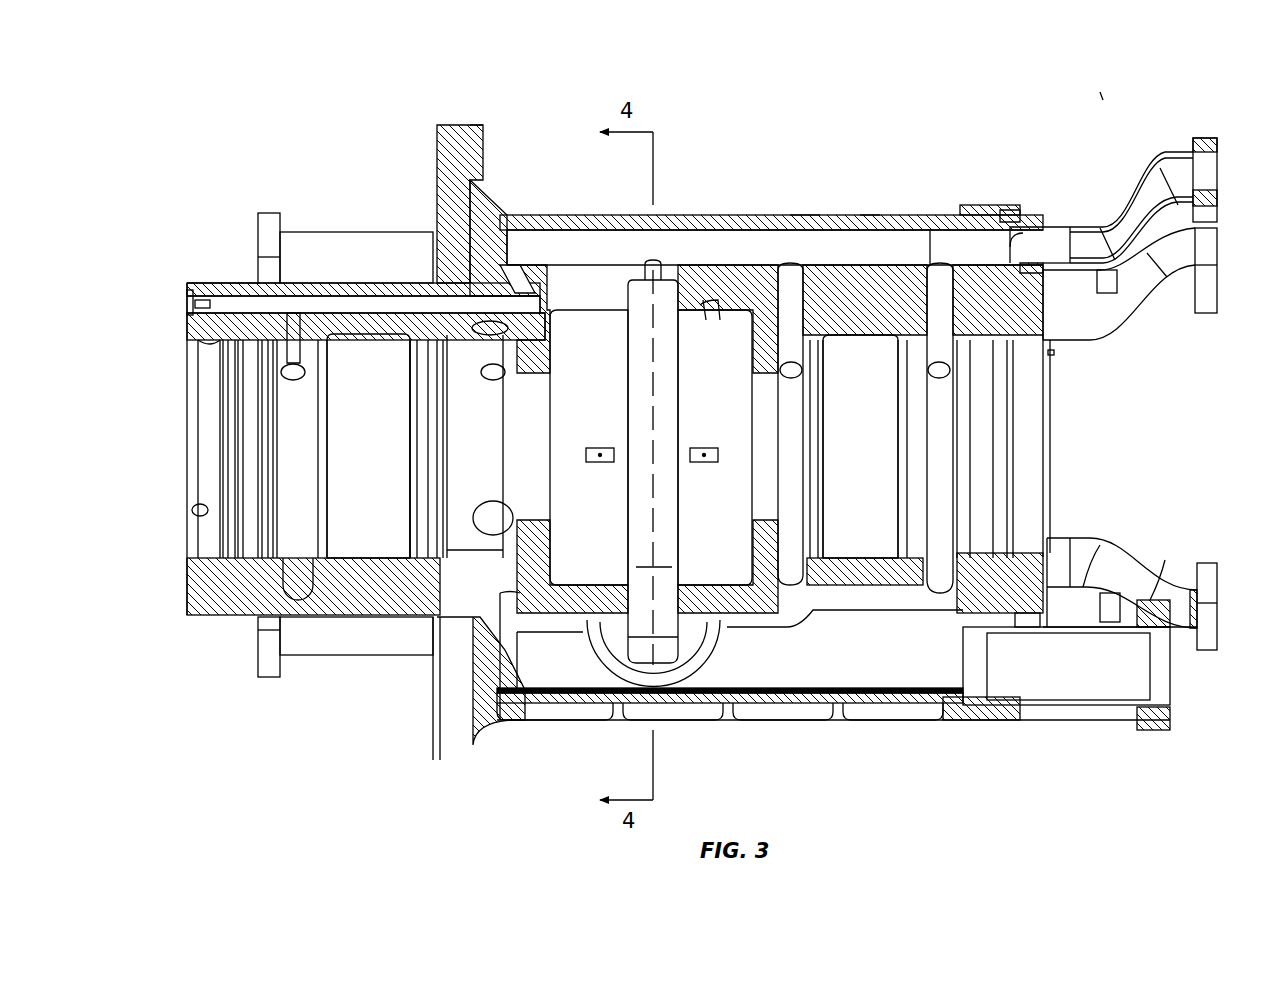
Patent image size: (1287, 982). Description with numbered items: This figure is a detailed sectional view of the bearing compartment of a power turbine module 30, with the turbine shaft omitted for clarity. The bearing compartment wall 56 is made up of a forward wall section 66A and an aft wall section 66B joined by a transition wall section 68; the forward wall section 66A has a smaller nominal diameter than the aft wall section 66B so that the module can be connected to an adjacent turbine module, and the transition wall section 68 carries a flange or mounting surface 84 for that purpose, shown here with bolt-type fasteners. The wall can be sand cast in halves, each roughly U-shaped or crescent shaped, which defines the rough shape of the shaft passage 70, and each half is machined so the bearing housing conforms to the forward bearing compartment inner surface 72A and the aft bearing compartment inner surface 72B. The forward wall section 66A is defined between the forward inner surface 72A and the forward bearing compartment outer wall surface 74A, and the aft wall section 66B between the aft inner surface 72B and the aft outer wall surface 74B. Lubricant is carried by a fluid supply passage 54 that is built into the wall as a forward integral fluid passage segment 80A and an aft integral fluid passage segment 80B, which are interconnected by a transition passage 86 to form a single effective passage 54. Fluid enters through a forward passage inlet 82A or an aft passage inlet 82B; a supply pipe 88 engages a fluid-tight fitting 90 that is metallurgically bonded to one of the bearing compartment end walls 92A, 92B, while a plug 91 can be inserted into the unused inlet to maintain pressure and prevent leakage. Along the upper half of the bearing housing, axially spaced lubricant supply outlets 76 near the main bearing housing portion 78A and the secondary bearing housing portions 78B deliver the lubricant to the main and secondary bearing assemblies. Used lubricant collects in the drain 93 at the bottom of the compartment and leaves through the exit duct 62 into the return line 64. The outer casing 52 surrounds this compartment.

The power turbine module 30 is at (1105, 95).
The housing 52 is at (805, 133).
The fluid supply passage 54 is at (712, 215).
The bearing compartment wall 56 is at (870, 212).
The exit duct 62 is at (833, 656).
The return line 64 is at (1056, 665).
The forward wall section 66A is at (167, 210).
The aft wall section 66B is at (988, 190).
The transition wall section 68 is at (490, 120).
The shaft passage 70 is at (165, 375).
The forward bearing compartment inner surface 72A is at (385, 335).
The aft bearing compartment inner surface 72B is at (875, 335).
The forward bearing compartment outer wall surface 74A is at (250, 283).
The aft bearing compartment outer wall surface 74B is at (590, 230).
The lubricant supply outlets 76 is at (483, 330).
The main bearing housing portion 78A is at (647, 464).
The secondary bearing housing portions 78B is at (617, 449).
The forward integral fluid passage segment 80A is at (400, 305).
The aft integral fluid passage segment 80B is at (930, 240).
The forward passage inlet 82A is at (196, 300).
The aft passage inlet 82B is at (1030, 240).
The mounting surface 84 is at (440, 135).
The transition passage 86 is at (520, 275).
The supply pipes 88 is at (1222, 172).
The fitting 90 is at (1010, 243).
The plug 91 is at (187, 300).
The bearing compartment end wall 92A is at (187, 590).
The bearing compartment end wall 92B is at (1015, 208).
The drain 93 is at (612, 658).